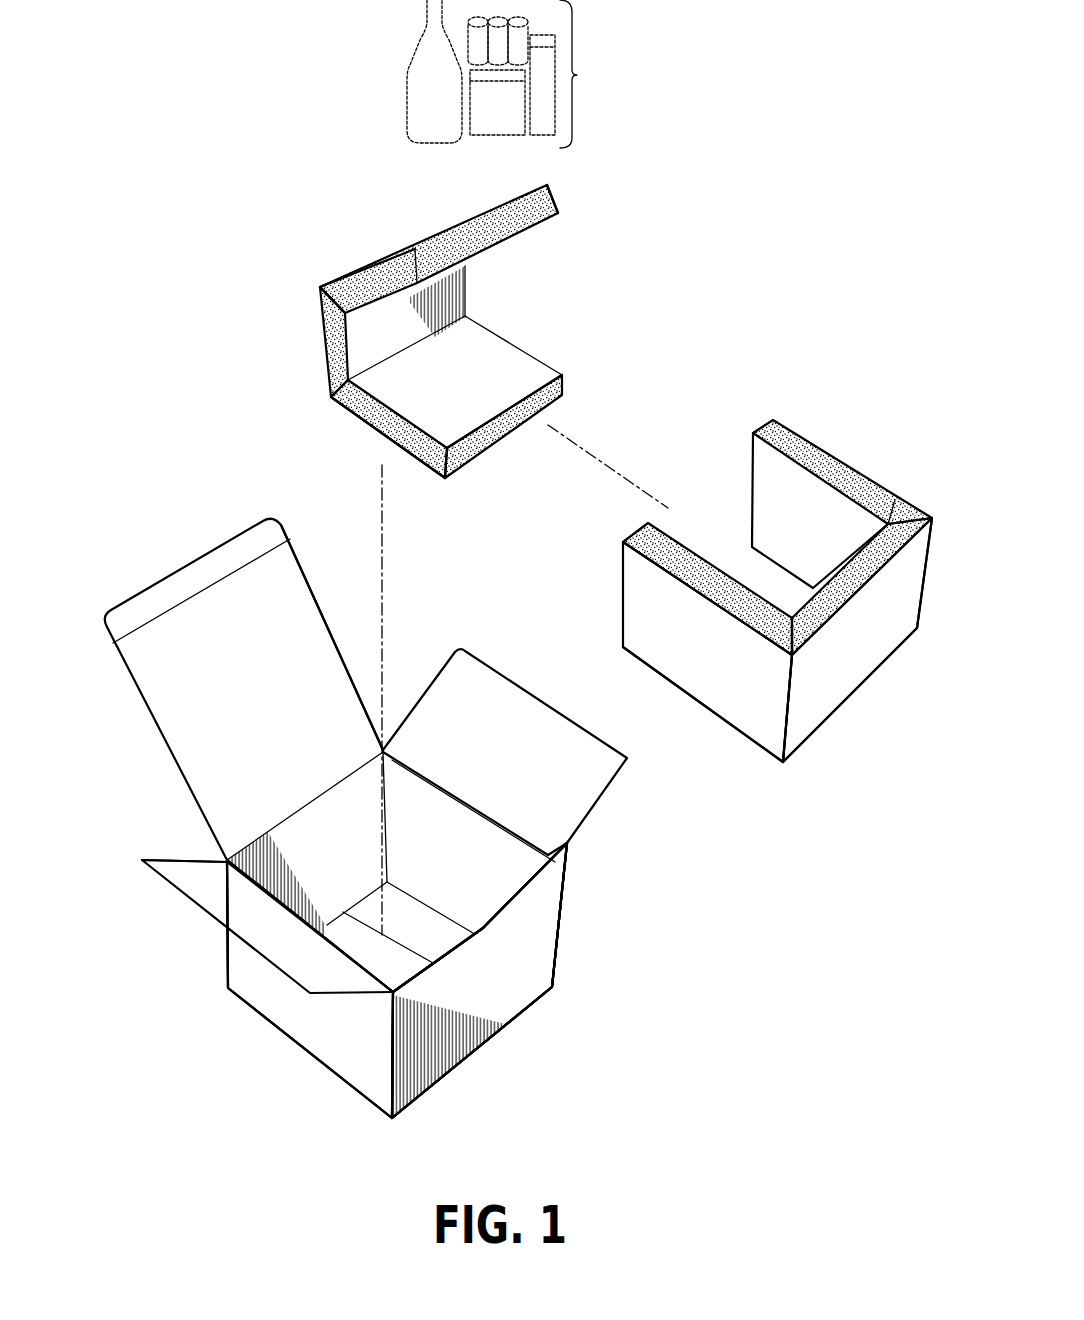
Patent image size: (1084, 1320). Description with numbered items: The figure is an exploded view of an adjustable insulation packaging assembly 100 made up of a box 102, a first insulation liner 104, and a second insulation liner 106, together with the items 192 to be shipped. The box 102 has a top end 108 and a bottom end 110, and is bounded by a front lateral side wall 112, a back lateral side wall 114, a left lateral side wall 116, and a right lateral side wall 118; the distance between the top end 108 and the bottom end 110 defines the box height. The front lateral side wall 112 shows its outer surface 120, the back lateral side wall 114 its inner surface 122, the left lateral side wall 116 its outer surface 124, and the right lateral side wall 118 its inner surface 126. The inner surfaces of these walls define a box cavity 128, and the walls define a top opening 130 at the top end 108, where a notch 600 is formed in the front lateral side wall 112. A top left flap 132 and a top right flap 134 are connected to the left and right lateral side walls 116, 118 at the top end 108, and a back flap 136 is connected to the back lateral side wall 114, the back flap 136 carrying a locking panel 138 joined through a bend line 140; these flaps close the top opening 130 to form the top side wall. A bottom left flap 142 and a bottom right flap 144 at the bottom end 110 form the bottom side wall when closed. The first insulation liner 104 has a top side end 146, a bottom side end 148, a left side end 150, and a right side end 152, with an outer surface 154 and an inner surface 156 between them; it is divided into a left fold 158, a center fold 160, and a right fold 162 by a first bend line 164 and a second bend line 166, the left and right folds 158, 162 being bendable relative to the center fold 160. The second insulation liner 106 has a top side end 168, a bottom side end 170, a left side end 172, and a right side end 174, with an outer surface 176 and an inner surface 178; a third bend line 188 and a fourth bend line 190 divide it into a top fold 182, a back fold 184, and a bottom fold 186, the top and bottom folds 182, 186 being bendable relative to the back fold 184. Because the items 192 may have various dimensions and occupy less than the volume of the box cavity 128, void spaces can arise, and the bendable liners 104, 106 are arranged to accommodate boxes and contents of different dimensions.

The adjustable insulation packaging assembly 100 is at (142, 438).
The box 102 is at (410, 830).
The first insulation liner 104 is at (750, 601).
The second insulation liner 106 is at (426, 351).
The top end 108 is at (535, 890).
The bottom end 110 is at (537, 1007).
The front lateral side wall 112 is at (540, 947).
The back lateral side wall 114 is at (352, 803).
The left lateral side wall 116 is at (322, 1037).
The right lateral side wall 118 is at (530, 830).
The outer surface 120 is at (547, 987).
The inner surface 122 is at (283, 850).
The outer surface 124 is at (273, 997).
The inner surface 126 is at (427, 830).
The box cavity 128 is at (537, 863).
The top opening 130 is at (430, 963).
The top left flap 132 is at (205, 890).
The top right flap 134 is at (453, 700).
The back flap 136 is at (277, 618).
The locking panel 138 is at (148, 608).
The bend line 140 is at (222, 578).
The bottom left flap 142 is at (370, 957).
The bottom right flap 144 is at (423, 913).
The top side end 146 is at (892, 520).
The bottom side end 148 is at (852, 637).
The left side end 150 is at (622, 600).
The right side end 152 is at (755, 483).
The outer surface 154 is at (800, 693).
The inner surface 156 is at (815, 490).
The left fold 158 is at (725, 665).
The center fold 160 is at (840, 632).
The right fold 162 is at (863, 487).
The first bend line 164 is at (818, 648).
The second bend line 166 is at (928, 580).
The top side end 168 is at (552, 225).
The bottom side end 170 is at (547, 413).
The left side end 172 is at (422, 466).
The right side end 174 is at (553, 363).
The outer surface 176 is at (433, 244).
The inner surface 178 is at (472, 355).
The top fold 182 is at (362, 263).
The back fold 184 is at (327, 373).
The bottom fold 186 is at (370, 427).
The third bend line 188 is at (317, 308).
The fourth bend line 190 is at (465, 317).
The items 192 is at (577, 75).
The notch 600 is at (483, 928).